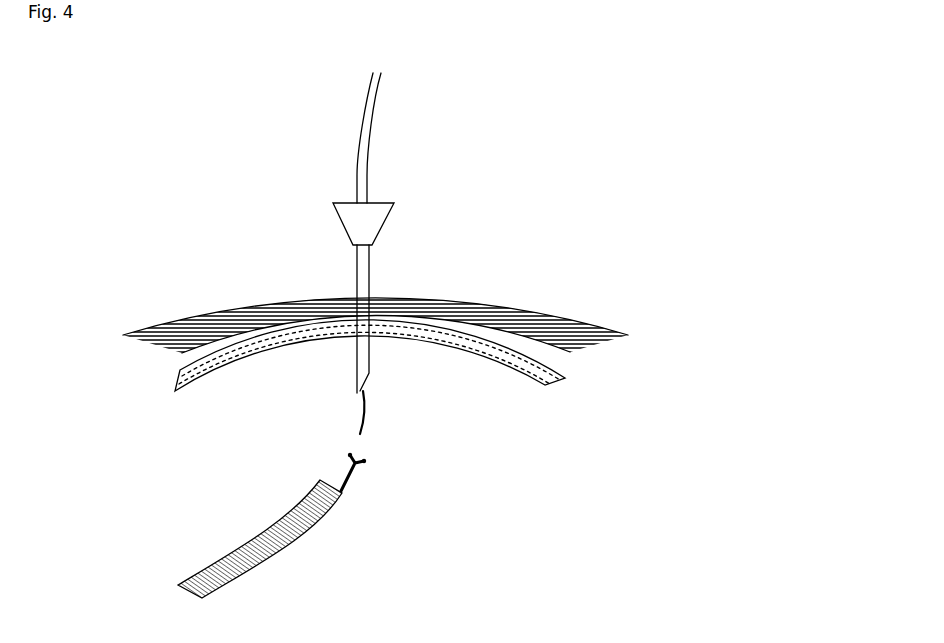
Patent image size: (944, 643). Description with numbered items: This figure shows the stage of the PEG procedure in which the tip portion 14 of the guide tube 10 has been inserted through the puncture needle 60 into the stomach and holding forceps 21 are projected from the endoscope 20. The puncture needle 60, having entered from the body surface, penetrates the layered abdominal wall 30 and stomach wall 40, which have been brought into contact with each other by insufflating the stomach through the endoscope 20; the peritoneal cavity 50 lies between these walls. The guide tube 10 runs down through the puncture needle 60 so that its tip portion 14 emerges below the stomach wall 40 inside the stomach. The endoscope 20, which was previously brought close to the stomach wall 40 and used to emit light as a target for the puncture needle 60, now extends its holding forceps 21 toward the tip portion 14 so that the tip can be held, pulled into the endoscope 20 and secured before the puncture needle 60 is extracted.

The guide tube 10 is at (362, 167).
The puncture needle 60 is at (398, 262).
The tip portion 14 is at (367, 408).
The abdominal wall 30 is at (278, 313).
The peritoneal cavity 50 is at (525, 340).
The stomach wall 40 is at (443, 338).
The holding forceps 21 is at (358, 470).
The endoscope 20 is at (272, 543).